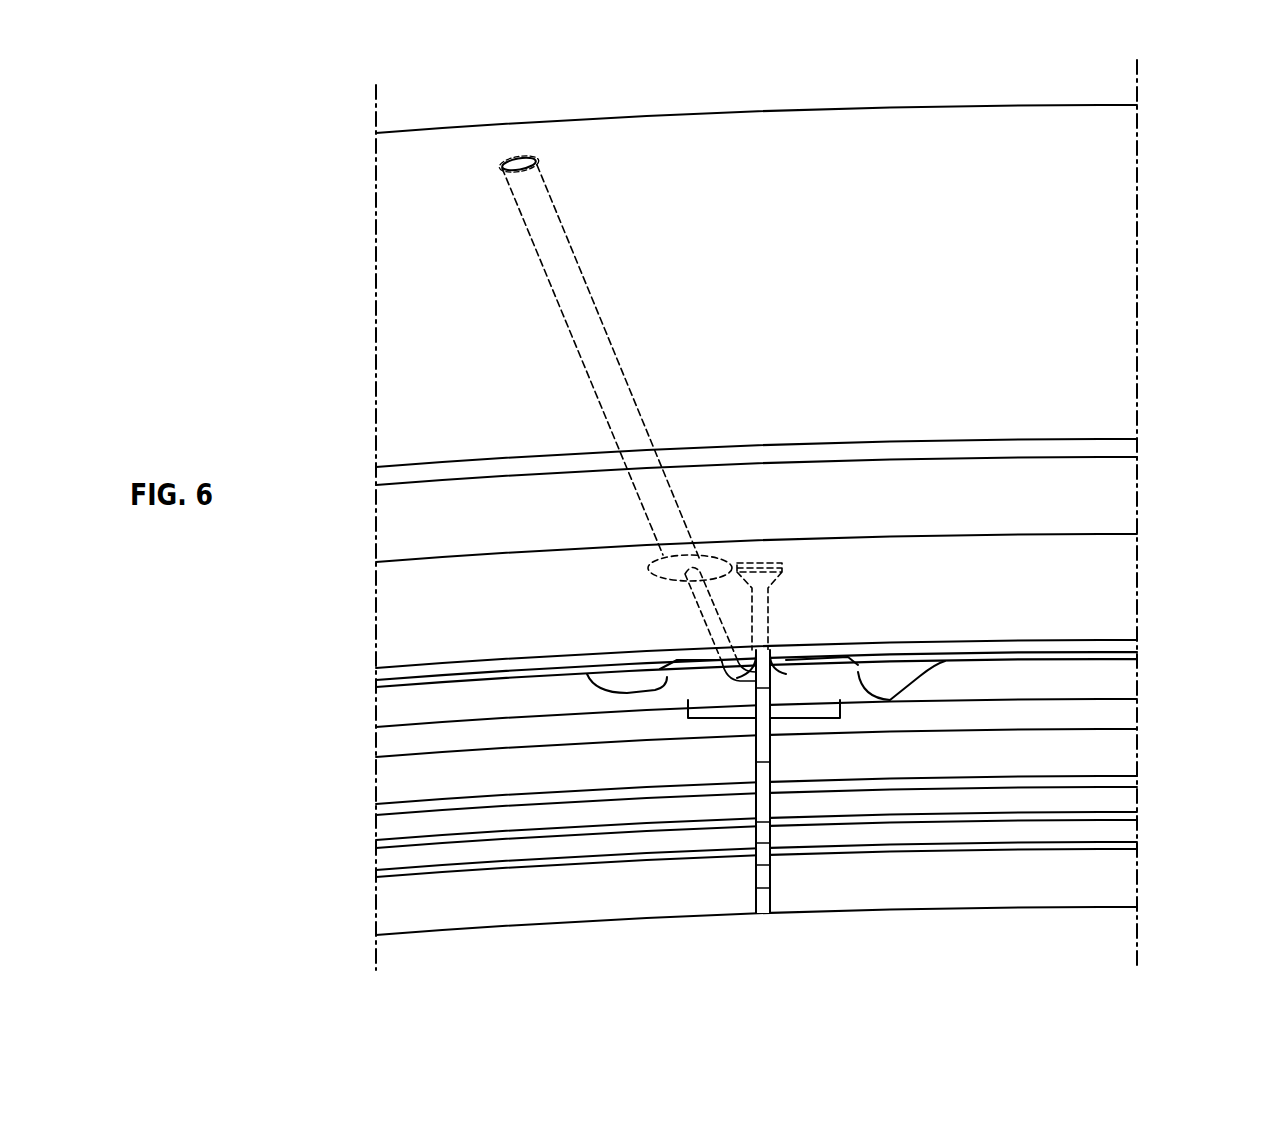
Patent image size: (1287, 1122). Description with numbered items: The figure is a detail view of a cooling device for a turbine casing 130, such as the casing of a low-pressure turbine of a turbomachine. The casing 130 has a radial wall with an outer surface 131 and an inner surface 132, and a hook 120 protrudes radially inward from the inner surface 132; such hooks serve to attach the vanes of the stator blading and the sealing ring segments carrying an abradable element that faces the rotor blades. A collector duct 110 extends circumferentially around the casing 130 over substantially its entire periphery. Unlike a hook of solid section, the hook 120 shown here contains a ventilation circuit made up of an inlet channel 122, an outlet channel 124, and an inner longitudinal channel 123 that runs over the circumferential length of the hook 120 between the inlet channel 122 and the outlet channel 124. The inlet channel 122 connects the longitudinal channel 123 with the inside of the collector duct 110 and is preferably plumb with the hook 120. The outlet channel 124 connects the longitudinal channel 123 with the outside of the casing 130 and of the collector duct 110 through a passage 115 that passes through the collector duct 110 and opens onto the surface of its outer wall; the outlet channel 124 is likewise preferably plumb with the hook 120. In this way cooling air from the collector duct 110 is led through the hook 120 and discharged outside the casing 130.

The collector duct 110 is at (850, 220).
The passage 115 is at (592, 340).
The hook 120 is at (472, 700).
The inlet channel 122 is at (766, 615).
The inner longitudinal channel 123 is at (667, 678).
The outlet channel 124 is at (706, 608).
The turbine casing 130 is at (462, 813).
The outer surface 131 is at (458, 680).
The inner surface 132 is at (563, 893).